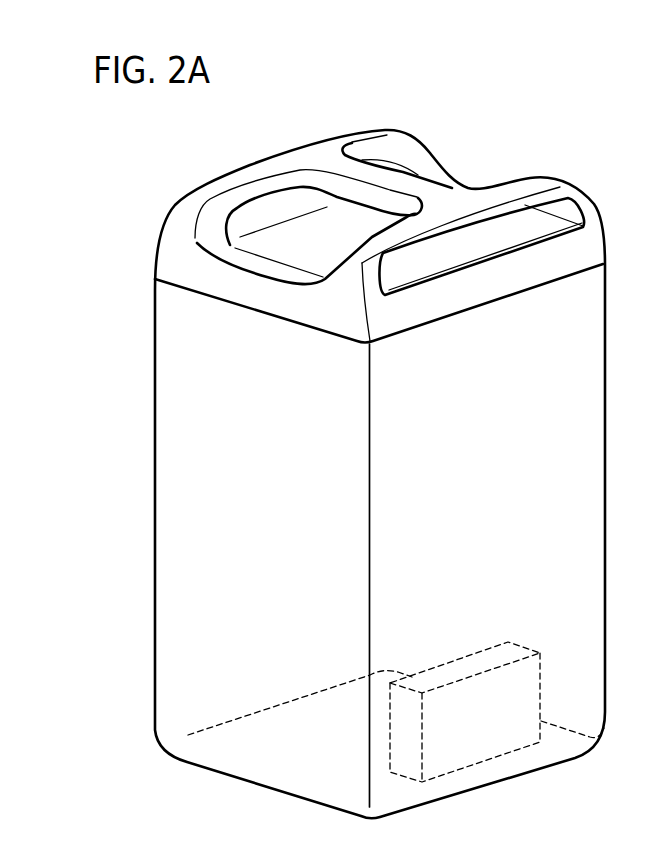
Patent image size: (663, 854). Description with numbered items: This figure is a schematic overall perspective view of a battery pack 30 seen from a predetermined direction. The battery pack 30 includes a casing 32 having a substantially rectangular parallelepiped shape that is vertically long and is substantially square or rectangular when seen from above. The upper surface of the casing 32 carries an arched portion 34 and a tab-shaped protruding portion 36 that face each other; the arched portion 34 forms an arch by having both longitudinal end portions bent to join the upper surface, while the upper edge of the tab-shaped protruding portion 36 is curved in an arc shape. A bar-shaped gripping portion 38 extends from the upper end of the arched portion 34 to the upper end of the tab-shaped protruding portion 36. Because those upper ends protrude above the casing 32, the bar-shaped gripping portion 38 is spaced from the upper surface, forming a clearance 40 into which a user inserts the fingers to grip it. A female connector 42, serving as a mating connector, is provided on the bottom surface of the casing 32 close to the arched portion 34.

The battery pack 30 is at (575, 80).
The casing 32 is at (592, 345).
The arched portion 34 is at (540, 197).
The tab-shaped protruding portion 36 is at (260, 213).
The bar-shaped gripping portion 38 is at (399, 180).
The clearance 40 is at (348, 208).
The female connector 42 is at (528, 646).